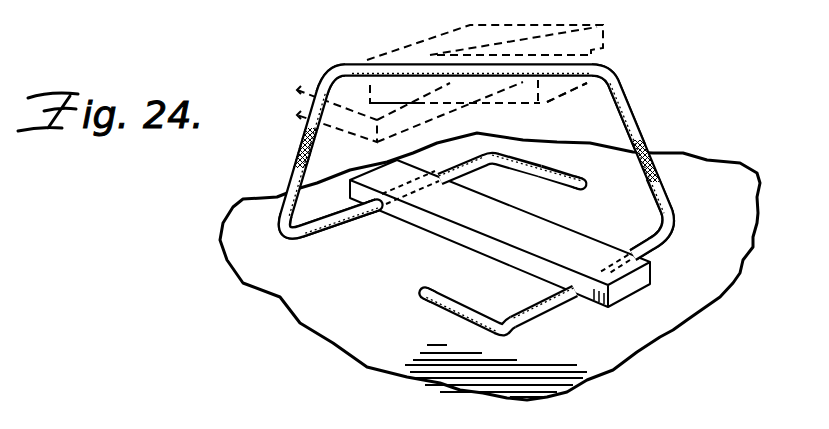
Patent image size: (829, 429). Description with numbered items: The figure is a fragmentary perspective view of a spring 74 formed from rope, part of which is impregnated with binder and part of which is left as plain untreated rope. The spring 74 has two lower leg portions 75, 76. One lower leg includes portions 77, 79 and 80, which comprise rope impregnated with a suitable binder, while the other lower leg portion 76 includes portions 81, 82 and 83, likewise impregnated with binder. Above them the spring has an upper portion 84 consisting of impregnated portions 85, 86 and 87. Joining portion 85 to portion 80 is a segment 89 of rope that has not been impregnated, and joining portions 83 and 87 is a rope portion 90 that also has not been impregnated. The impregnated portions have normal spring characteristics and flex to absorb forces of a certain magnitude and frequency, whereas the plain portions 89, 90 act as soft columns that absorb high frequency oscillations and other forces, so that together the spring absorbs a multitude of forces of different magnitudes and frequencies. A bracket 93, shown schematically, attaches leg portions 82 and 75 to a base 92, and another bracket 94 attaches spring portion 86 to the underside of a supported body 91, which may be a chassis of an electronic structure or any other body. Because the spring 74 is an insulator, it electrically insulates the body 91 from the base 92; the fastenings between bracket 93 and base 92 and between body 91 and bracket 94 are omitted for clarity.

The spring 74 is at (666, 76).
The lower leg portion 75 is at (657, 247).
The lower leg portion 76 is at (346, 228).
The impregnated portion 77 is at (437, 308).
The impregnated portion 79 is at (553, 313).
The impregnated portion 80 is at (666, 207).
The impregnated portion 81 is at (563, 189).
The impregnated portion 82 is at (473, 177).
The impregnated portion 83 is at (280, 203).
The upper portion 84 is at (616, 68).
The impregnated portion 85 is at (640, 108).
The impregnated portion 86 is at (460, 80).
The impregnated portion 87 is at (322, 80).
The rope segment 89 is at (646, 142).
The rope portion 90 is at (297, 142).
The supported body 91 is at (410, 43).
The base 92 is at (668, 326).
The bracket 93 is at (445, 222).
The bracket 94 is at (520, 102).